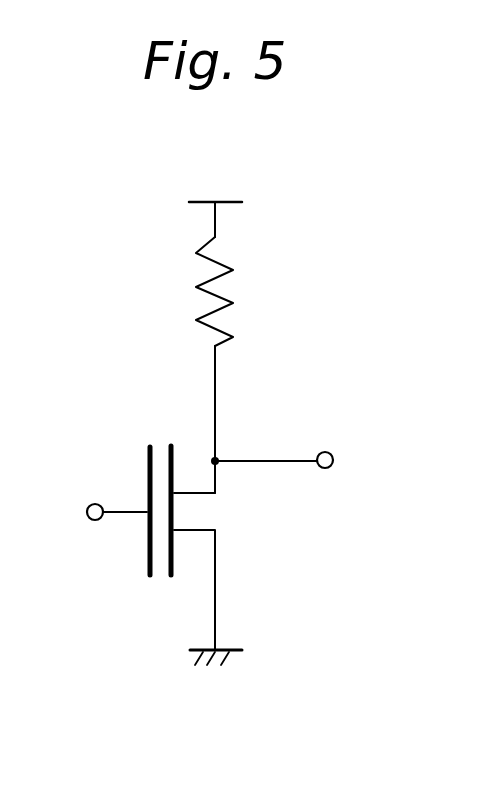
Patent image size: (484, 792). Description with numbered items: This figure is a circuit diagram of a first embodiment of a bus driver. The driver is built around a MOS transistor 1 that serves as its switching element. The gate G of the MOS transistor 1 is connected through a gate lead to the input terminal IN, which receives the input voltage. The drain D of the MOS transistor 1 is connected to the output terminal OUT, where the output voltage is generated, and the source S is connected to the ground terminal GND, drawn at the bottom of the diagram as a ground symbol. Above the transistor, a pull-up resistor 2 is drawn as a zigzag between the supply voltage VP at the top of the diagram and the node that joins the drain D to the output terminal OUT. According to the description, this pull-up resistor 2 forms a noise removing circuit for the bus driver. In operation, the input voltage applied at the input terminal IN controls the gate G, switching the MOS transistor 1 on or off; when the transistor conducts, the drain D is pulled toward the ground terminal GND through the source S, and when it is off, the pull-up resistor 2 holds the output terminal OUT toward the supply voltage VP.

The MOS transistor 1 is at (151, 548).
The pull-up resistor 2 is at (222, 298).
The supply voltage VP is at (215, 204).
The input terminal IN is at (96, 504).
The output terminal OUT is at (323, 452).
The ground terminal GND is at (215, 677).
The gate G is at (125, 494).
The drain D is at (194, 478).
The source S is at (194, 590).